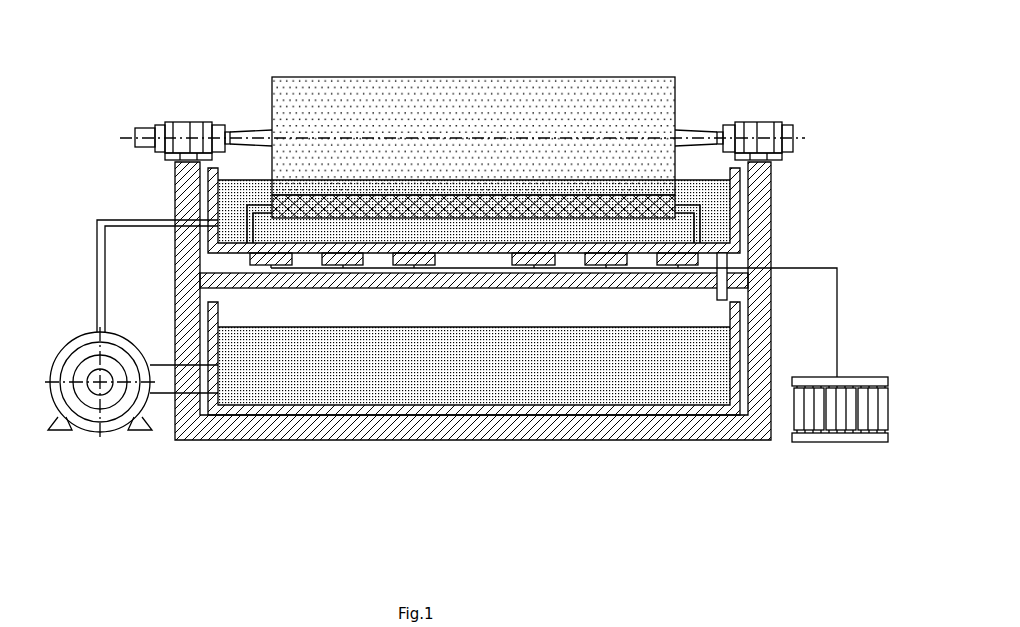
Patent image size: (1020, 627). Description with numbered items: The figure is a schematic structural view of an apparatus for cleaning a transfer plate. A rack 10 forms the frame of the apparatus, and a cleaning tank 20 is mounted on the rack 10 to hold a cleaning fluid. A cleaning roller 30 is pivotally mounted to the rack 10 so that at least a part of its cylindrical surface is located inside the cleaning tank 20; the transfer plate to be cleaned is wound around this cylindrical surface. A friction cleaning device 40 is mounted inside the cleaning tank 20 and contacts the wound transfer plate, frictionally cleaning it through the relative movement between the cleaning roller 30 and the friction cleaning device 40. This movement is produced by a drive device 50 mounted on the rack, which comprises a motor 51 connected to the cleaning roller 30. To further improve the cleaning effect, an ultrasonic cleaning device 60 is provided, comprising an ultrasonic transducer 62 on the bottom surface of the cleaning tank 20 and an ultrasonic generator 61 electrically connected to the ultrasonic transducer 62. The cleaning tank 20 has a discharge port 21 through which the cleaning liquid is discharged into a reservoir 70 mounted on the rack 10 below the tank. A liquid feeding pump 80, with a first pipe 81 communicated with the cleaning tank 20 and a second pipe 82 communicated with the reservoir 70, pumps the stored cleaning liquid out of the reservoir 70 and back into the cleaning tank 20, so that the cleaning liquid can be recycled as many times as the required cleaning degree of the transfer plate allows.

The rack 10 is at (593, 442).
The cleaning tank 20 is at (741, 190).
The discharge port 21 is at (728, 293).
The cleaning roller 30 is at (522, 76).
The friction cleaning device 40 is at (673, 218).
The drive device 50 is at (180, 121).
The motor 51 is at (141, 127).
The ultrasonic cleaning device 60 is at (840, 387).
The ultrasonic generator 61 is at (865, 380).
The ultrasonic transducer 62 is at (606, 266).
The reservoir 70 is at (700, 410).
The liquid feeding pump 80 is at (67, 339).
The first pipe 81 is at (135, 228).
The second pipe 82 is at (160, 364).